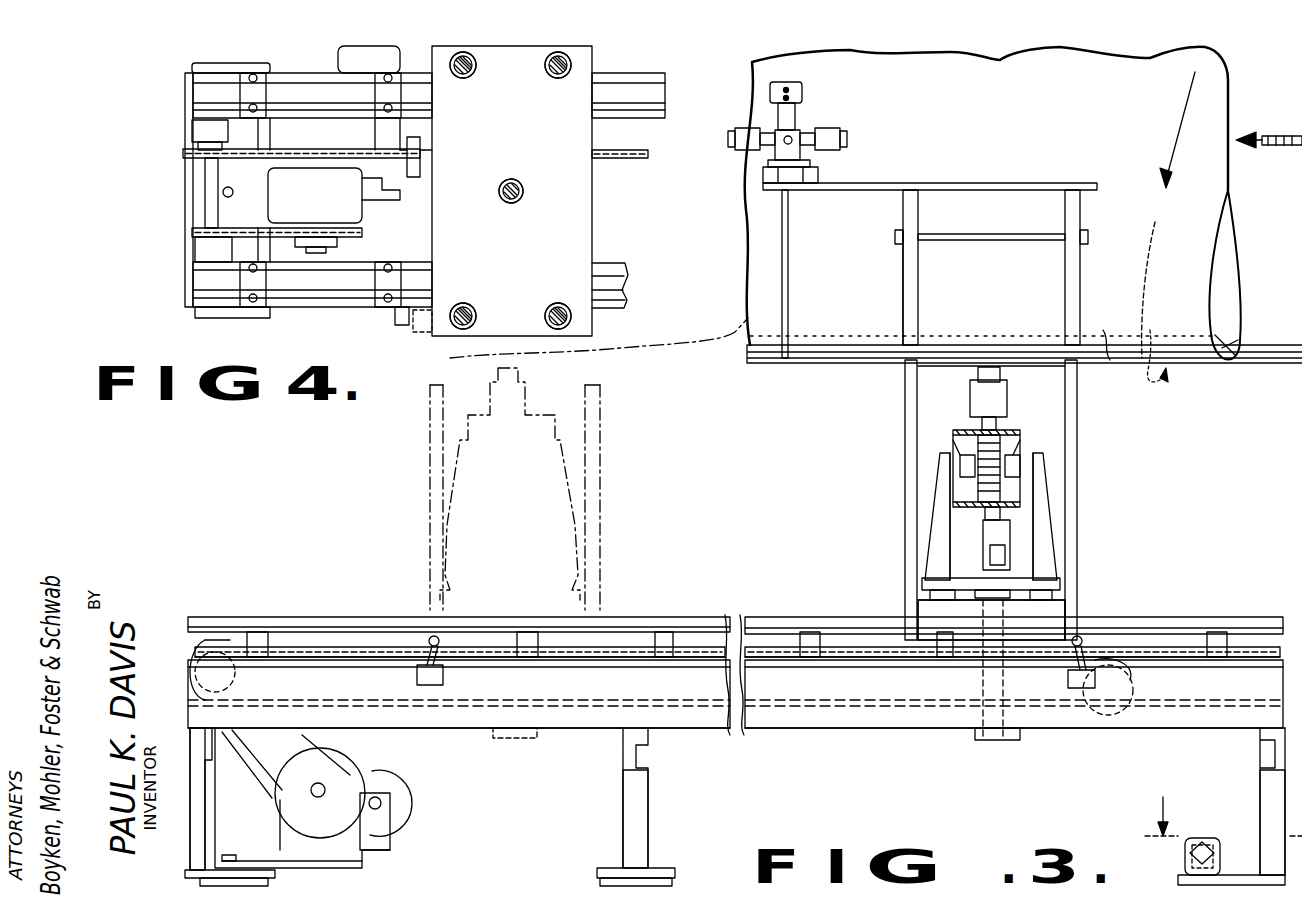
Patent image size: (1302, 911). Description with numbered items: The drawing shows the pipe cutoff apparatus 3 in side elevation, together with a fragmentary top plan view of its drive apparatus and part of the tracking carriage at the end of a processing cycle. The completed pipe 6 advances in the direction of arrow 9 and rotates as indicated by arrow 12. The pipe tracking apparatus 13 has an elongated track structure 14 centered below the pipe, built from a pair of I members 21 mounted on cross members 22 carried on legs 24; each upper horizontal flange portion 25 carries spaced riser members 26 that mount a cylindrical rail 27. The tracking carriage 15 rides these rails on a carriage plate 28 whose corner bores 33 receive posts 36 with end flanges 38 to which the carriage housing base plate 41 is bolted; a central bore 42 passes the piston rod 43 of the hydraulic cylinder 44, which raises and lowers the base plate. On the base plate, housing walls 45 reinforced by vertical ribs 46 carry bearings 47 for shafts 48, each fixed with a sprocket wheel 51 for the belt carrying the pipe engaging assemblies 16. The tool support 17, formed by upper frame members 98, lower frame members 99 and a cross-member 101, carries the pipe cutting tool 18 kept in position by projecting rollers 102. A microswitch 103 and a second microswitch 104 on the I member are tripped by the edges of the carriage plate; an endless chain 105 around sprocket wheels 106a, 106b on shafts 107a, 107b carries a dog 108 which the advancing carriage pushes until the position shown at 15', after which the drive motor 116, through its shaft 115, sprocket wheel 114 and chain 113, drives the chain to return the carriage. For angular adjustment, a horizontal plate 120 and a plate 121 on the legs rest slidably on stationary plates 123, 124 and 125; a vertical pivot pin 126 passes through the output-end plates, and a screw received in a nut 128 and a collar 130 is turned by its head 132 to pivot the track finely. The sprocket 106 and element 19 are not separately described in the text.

In FIG. 3, the pipe cutoff apparatus 3 is at (735, 376).
In FIG. 3, the pipe 6 is at (990, 35).
In FIG. 3, the arrow 9 is at (1275, 125).
In FIG. 3, the arrow 12 is at (1178, 128).
In FIG. 3, the pipe tracking apparatus 13 is at (1095, 533).
In FIG. 3, the track structure 14 is at (1090, 773).
In FIG. 3, the tracking carriage 15 is at (956, 454).
In FIG. 3, the tracking carriage at completion position 15' is at (551, 489).
In FIG. 3, the pipe engaging assemblies 16 is at (1008, 382).
In FIG. 3, the tool support 17 is at (900, 296).
In FIG. 3, the pipe cutting tool 18 is at (820, 101).
In FIG. 4, the motor 19 is at (268, 178).
In FIG. 3, the I members 21 is at (436, 712).
In FIG. 3, the cross members 22 is at (185, 742).
In FIG. 3, the legs 24 is at (190, 855).
In FIG. 3, the upper horizontal flange portion 25 is at (588, 660).
In FIG. 4, the riser members 26 is at (380, 80).
In FIG. 3, the riser members 26 is at (258, 657).
In FIG. 4, the cylindrical rail 27 is at (640, 68).
In FIG. 3, the cylindrical rail 27 is at (628, 617).
In FIG. 4, the carriage plate 28 is at (586, 242).
In FIG. 3, the carriage plate 28 is at (930, 612).
In FIG. 4, the cylindrical bore 33 is at (470, 78).
In FIG. 4, the post 36 is at (476, 65).
In FIG. 3, the annular horizontal end flange 38 is at (922, 590).
In FIG. 3, the carriage housing base plate 41 is at (1013, 590).
In FIG. 4, the vertical cylindrical bore 42 is at (520, 182).
In FIG. 4, the piston rod 43 is at (520, 197).
In FIG. 3, the piston rod 43 is at (982, 620).
In FIG. 3, the hydraulic cylinder 44 is at (990, 740).
In FIG. 3, the housing walls 45 is at (940, 455).
In FIG. 3, the vertical ribs 46 is at (940, 490).
In FIG. 3, the bearing 47 is at (960, 442).
In FIG. 3, the shafts 48 is at (978, 505).
In FIG. 3, the sprocket wheel 51 is at (1005, 430).
In FIG. 3, the upper frame members 98 is at (903, 270).
In FIG. 3, the lower frame members 99 is at (910, 300).
In FIG. 3, the cross-member 101 is at (990, 228).
In FIG. 3, the projecting rollers 102 is at (830, 125).
In FIG. 3, the microswitch 103 is at (1068, 682).
In FIG. 4, the second microswitch 104 is at (402, 330).
In FIG. 3, the second microswitch 104 is at (417, 675).
In FIG. 4, the endless chain 105 is at (610, 170).
In FIG. 3, the endless chain 105 is at (330, 645).
In FIG. 4, the sprocket block 106 is at (198, 148).
In FIG. 3, the sprocket wheel 106a is at (1130, 672).
In FIG. 3, the sprocket wheel 106b is at (220, 645).
In FIG. 3, the shaft 107a is at (1133, 700).
In FIG. 4, the shaft 107b is at (205, 190).
In FIG. 3, the shaft 107b is at (195, 652).
In FIG. 4, the dog 108 is at (415, 178).
In FIG. 3, the dog 108 is at (430, 635).
In FIG. 4, the endless chain 113 is at (235, 200).
In FIG. 3, the endless chain 113 is at (262, 790).
In FIG. 3, the sprocket wheel 114 is at (350, 765).
In FIG. 4, the shaft 115 is at (330, 250).
In FIG. 3, the shaft 115 is at (322, 797).
In FIG. 4, the drive motor 116 is at (378, 200).
In FIG. 3, the drive motor 116 is at (400, 788).
In FIG. 4, the horizontal plate 120 is at (185, 178).
In FIG. 3, the horizontal plate 120 is at (183, 876).
In FIG. 3, the plate 121 is at (598, 872).
In FIG. 4, the horizontal plate 123 is at (195, 318).
In FIG. 3, the horizontal plate 123 is at (268, 884).
In FIG. 3, the horizontal plate 124 is at (672, 882).
In FIG. 3, the horizontal plate 125 is at (1178, 880).
In FIG. 4, the vertical pivot pin 126 is at (205, 225).
In FIG. 3, the vertical pivot pin 126 is at (232, 855).
In FIG. 3, the nut 128 is at (1200, 838).
In FIG. 3, the collar 130 is at (1185, 860).
In FIG. 3, the head 132 is at (1214, 853).